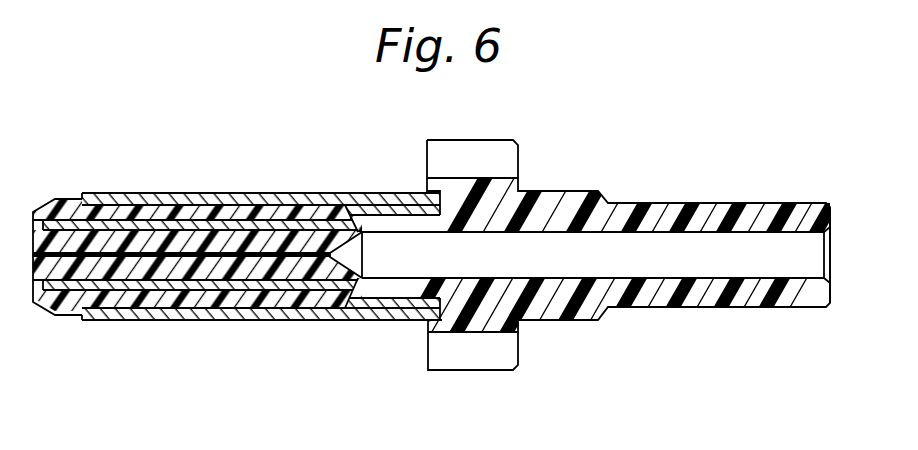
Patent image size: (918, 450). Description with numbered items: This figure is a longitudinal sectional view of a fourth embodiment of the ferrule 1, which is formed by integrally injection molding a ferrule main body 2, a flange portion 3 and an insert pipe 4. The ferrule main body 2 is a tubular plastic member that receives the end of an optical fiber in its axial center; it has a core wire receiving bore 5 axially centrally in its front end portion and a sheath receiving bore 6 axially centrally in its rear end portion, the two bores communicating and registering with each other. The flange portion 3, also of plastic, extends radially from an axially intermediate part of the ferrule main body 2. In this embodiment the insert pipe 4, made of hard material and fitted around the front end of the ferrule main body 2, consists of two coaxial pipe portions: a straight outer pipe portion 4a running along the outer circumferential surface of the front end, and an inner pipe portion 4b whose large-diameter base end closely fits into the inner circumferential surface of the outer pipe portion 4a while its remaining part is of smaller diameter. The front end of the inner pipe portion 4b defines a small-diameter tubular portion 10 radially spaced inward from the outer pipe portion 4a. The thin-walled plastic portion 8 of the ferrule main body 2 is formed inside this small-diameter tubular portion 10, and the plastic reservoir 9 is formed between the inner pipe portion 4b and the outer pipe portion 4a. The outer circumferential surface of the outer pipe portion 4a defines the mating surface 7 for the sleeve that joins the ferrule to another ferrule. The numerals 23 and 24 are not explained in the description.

The ferrule 1 is at (555, 160).
The ferrule main body 2 is at (672, 305).
The flange portion 3 is at (507, 325).
The insert pipe 4 is at (297, 123).
The outer pipe portion 4a is at (210, 193).
The inner pipe portion 4b is at (259, 230).
The core wire receiving bore 5 is at (293, 257).
The sheath receiving bore 6 is at (680, 236).
The mating surface 7 is at (303, 192).
The thin-walled plastic portion 8 is at (77, 273).
The plastic reservoir 9 is at (50, 199).
The small-diameter tubular portion 10 is at (52, 288).
The outer shield 23 is at (147, 198).
The inner shield layer 24 is at (168, 288).